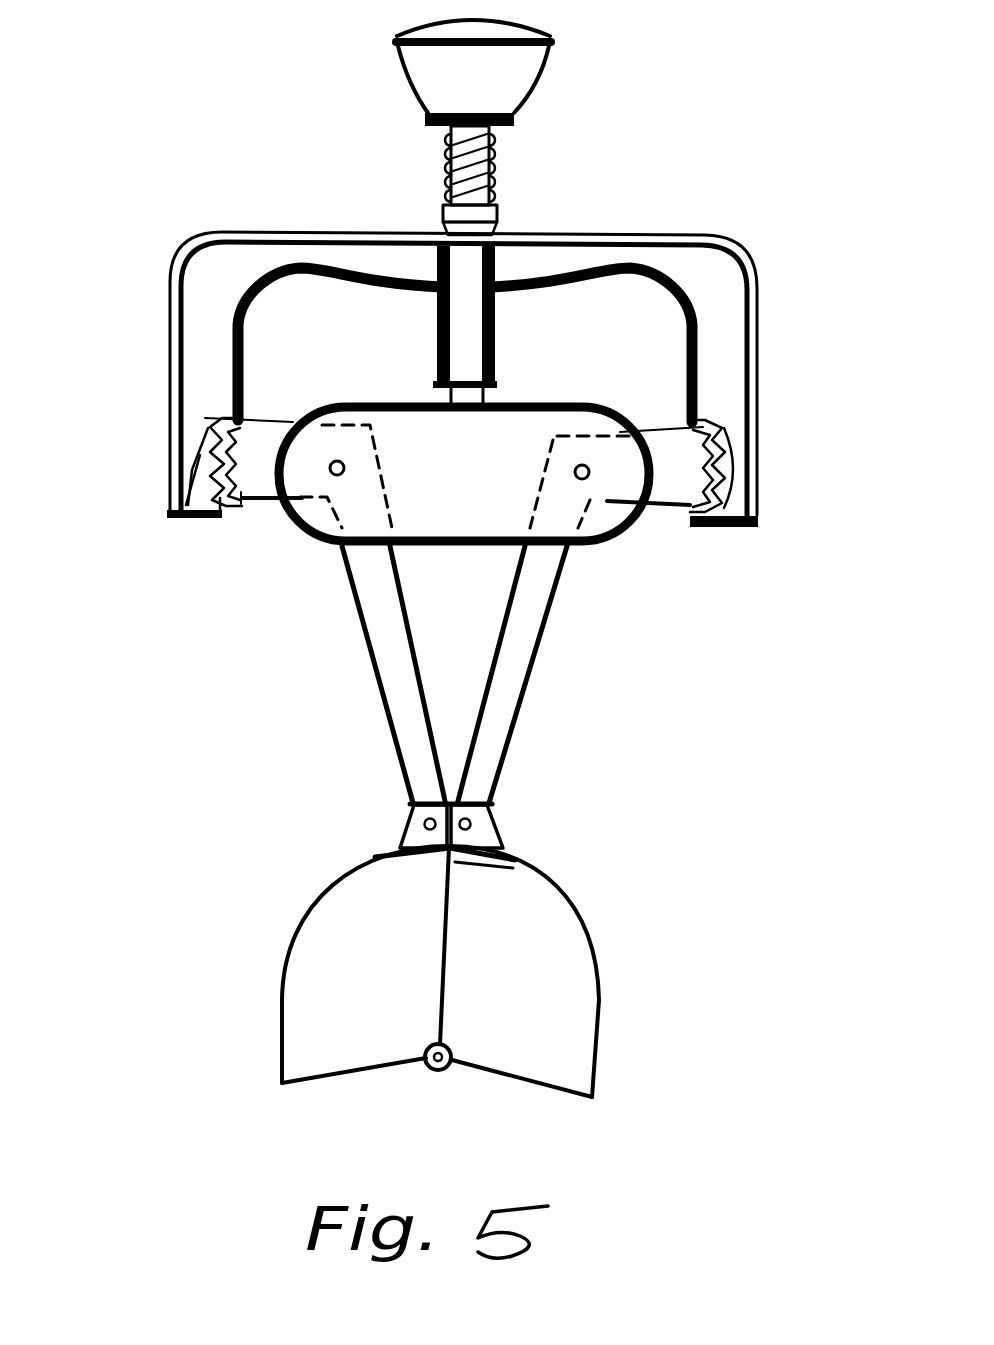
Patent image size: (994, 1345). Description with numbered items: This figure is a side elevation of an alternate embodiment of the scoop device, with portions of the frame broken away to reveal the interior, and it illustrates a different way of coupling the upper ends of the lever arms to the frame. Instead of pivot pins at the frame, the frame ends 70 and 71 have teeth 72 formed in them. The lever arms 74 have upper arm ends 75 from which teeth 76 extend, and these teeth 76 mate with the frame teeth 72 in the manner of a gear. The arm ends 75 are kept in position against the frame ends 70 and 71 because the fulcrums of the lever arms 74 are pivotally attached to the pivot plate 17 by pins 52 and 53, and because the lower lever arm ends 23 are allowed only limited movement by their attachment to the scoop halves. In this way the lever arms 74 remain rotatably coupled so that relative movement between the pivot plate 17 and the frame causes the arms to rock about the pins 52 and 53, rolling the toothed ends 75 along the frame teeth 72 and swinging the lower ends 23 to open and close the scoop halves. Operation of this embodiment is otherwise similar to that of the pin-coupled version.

The pivot plate 17 is at (490, 440).
The lever arm ends 23 is at (405, 790).
The pin 52 is at (345, 468).
The pin 53 is at (578, 472).
The frame end 70 is at (187, 473).
The frame end 71 is at (732, 474).
The teeth 72 is at (197, 463).
The lever arms 74 is at (357, 602).
The arm ends 75 is at (242, 503).
The teeth 76 is at (250, 440).